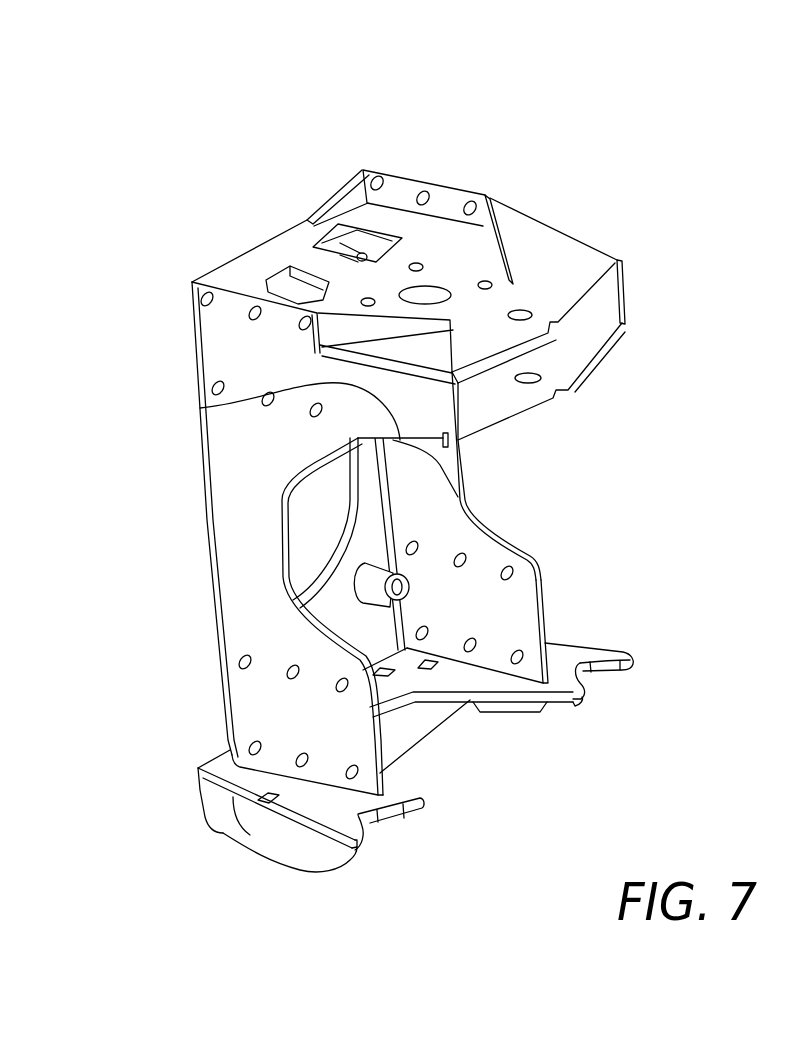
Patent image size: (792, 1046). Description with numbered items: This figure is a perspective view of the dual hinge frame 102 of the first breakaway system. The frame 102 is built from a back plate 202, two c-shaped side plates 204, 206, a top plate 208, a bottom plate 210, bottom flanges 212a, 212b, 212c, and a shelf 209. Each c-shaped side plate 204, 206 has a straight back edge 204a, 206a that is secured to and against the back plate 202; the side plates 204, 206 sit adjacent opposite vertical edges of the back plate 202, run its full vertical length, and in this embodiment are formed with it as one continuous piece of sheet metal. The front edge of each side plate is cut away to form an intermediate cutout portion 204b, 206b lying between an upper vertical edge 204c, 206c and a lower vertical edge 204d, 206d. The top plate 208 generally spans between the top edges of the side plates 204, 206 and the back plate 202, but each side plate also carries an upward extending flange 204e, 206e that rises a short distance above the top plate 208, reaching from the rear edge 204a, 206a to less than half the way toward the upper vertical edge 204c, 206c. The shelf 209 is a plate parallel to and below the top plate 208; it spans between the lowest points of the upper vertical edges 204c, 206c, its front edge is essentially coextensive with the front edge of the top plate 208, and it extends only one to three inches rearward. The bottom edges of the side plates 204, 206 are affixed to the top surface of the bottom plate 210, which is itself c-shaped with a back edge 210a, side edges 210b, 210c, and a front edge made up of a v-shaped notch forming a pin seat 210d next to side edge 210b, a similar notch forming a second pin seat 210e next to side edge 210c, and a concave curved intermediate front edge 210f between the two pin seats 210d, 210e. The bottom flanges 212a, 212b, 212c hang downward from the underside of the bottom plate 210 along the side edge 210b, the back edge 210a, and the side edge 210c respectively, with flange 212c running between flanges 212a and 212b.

The dual hinge frame 102 is at (665, 159).
The back plate 202 is at (300, 648).
The c-shaped side plate 204 is at (233, 515).
The straight back edge 204a is at (207, 458).
The intermediate cutout portion 204b is at (287, 587).
The upper vertical edge 204c is at (260, 392).
The lower vertical edge 204d is at (355, 850).
The upward extending flange 204e is at (243, 310).
The c-shaped side plate 206 is at (453, 520).
The straight back edge 206a is at (390, 452).
The intermediate cutout portion 206b is at (503, 540).
The upper vertical edge 206c is at (625, 296).
The lower vertical edge 206d is at (540, 590).
The upward extending flange 206e is at (405, 188).
The top plate 208 is at (550, 256).
The shelf 209 is at (584, 357).
The bottom plate 210 is at (563, 690).
The back edge 210a is at (230, 748).
The side edge 210b is at (206, 835).
The side edge 210c is at (618, 648).
The pin seat 210d is at (388, 822).
The pin seat 210e is at (602, 673).
The intermediate front edge 210f is at (470, 700).
The bottom flange 212a is at (280, 855).
The bottom flange 212b is at (605, 671).
The bottom flange 212c is at (403, 743).